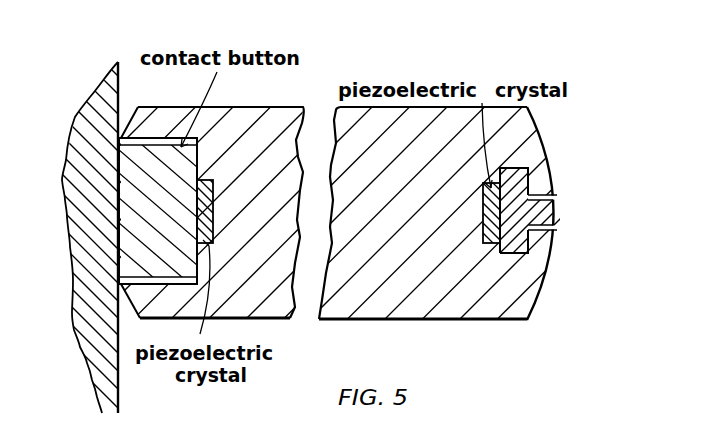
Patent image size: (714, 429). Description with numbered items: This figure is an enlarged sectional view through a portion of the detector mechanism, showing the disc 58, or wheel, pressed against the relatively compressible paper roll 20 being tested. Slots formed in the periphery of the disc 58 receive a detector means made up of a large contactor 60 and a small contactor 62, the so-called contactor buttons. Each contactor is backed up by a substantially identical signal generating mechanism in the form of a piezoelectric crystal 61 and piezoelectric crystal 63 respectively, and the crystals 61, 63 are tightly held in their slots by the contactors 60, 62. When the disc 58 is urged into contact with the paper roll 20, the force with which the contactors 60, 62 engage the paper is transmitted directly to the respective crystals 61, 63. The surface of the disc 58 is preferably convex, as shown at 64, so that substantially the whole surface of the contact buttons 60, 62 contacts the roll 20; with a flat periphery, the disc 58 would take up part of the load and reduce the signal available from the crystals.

The paper roll 20 is at (97, 88).
The disc 58 is at (345, 307).
The large contactor 60 is at (155, 147).
The piezoelectric crystal 61 is at (204, 180).
The small contactor 62 is at (521, 190).
The piezoelectric crystal 63 is at (492, 232).
The convex surface 64 is at (551, 258).